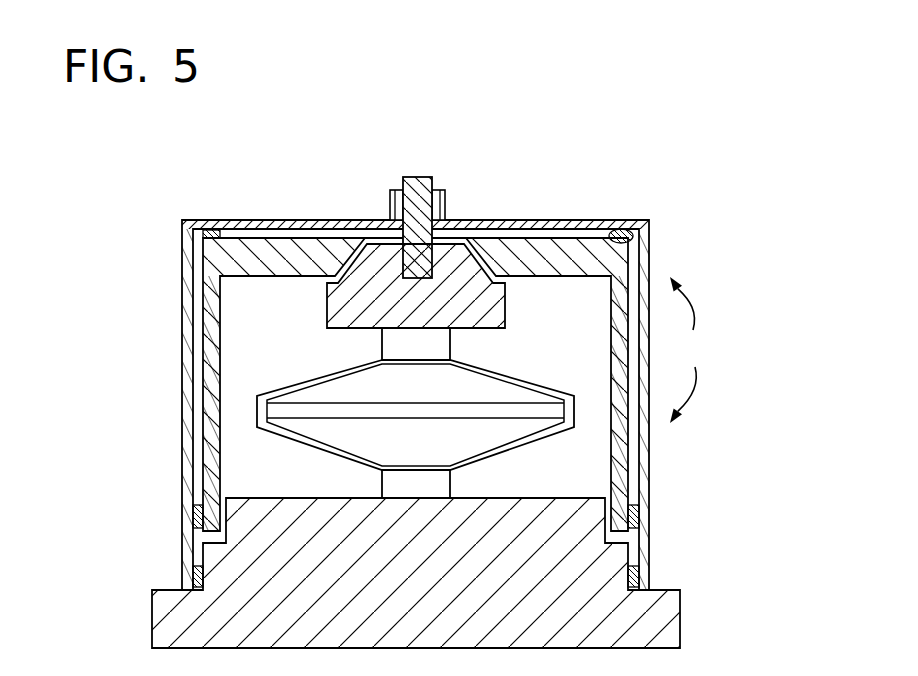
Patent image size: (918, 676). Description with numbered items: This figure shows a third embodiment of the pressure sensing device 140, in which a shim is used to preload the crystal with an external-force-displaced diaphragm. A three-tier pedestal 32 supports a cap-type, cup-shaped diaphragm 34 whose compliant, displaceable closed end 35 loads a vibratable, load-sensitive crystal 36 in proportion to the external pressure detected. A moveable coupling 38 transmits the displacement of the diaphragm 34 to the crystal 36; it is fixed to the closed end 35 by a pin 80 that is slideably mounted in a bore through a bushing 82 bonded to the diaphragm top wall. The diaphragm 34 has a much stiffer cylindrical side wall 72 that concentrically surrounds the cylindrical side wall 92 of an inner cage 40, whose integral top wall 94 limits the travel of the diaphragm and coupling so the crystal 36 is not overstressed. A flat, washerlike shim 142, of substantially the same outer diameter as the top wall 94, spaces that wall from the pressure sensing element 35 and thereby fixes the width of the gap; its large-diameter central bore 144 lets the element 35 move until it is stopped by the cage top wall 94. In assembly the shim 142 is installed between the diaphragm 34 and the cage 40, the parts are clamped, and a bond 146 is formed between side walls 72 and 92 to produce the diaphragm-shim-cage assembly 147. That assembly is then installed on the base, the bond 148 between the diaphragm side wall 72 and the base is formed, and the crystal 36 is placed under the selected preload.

The pedestal 32 is at (696, 618).
The diaphragm 34 is at (169, 467).
The closed end 35 is at (296, 220).
The crystal 36 is at (308, 366).
The moveable coupling 38 is at (521, 310).
The inner cage 40 is at (189, 337).
The cylindrical side wall 72 is at (650, 468).
The pin 80 is at (418, 177).
The bushing 82 is at (390, 192).
The cylindrical side wall 92 is at (204, 385).
The top wall 94 is at (496, 220).
The pressure sensing device 140 is at (124, 250).
The shim 142 is at (212, 230).
The central bore 144 is at (648, 248).
The bond 146 is at (640, 517).
The diaphragm-shim-cage assembly 147 is at (692, 350).
The bond 148 is at (640, 578).